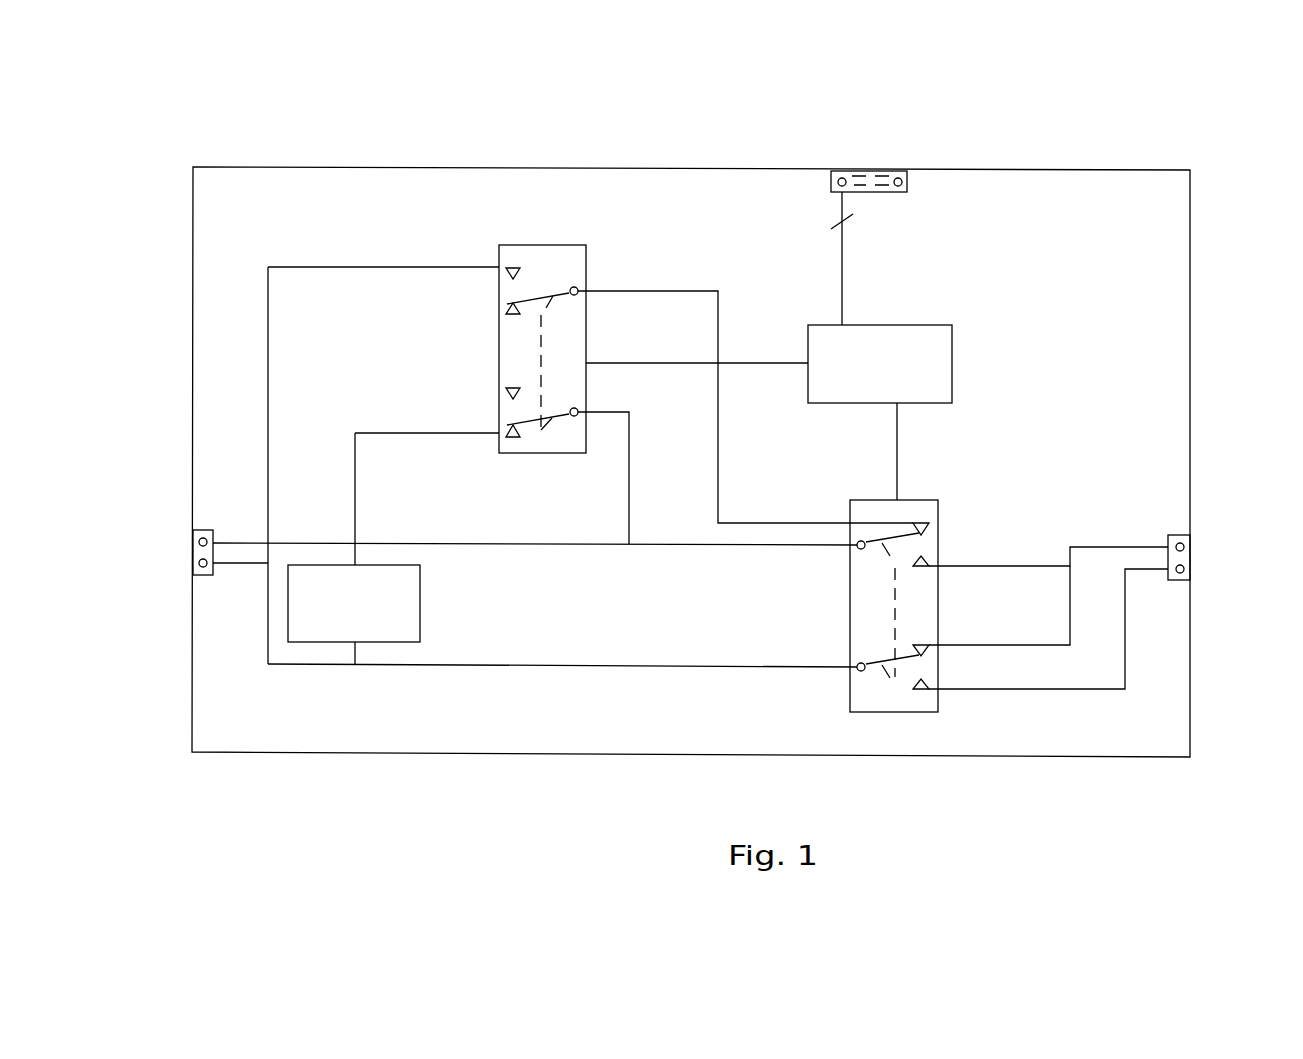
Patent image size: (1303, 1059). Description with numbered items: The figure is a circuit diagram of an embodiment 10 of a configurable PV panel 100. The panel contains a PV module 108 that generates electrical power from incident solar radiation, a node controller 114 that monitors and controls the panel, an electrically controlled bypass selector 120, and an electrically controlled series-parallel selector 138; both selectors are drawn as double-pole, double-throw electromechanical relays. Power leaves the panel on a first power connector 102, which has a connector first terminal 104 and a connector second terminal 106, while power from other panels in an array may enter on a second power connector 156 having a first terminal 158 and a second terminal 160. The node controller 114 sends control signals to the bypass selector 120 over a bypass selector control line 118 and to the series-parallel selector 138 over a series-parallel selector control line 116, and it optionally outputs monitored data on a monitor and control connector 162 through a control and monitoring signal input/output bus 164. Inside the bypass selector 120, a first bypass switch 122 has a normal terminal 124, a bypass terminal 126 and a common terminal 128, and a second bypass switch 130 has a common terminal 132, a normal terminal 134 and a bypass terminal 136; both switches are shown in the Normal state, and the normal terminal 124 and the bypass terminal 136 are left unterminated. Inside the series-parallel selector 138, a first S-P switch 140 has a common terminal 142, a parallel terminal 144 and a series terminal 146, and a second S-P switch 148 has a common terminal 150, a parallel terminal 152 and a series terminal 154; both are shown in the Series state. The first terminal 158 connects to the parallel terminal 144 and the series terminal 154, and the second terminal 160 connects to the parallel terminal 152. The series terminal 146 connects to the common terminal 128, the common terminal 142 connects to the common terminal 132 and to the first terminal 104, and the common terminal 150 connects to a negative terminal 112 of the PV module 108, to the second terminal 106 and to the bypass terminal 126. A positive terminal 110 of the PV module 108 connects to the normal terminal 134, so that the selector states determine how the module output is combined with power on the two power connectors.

The embodiment 10 is at (297, 90).
The configurable PV panel 100 is at (675, 168).
The first power connector P1 102 is at (202, 530).
The connector P1 first terminal 104 is at (193, 542).
The connector P1 second terminal 106 is at (193, 563).
The PV module 108 is at (420, 612).
The positive terminal 110 is at (357, 563).
The negative terminal 112 is at (357, 644).
The node controller 114 is at (927, 325).
The series-parallel selector control line 116 is at (897, 432).
The bypass selector control line 118 is at (735, 363).
The bypass selector 120 is at (520, 245).
The first bypass switch 122 is at (541, 295).
The normal terminal 124 is at (507, 314).
The bypass terminal 126 is at (508, 282).
The common terminal 128 is at (577, 296).
The second bypass switch 130 is at (531, 421).
The common terminal 132 is at (575, 407).
The normal terminal 134 is at (507, 437).
The bypass terminal 136 is at (507, 392).
The series-parallel selector Xn 138 is at (908, 500).
The first S-P switch 140 is at (897, 536).
The common terminal 142 is at (856, 552).
The parallel terminal 144 is at (930, 560).
The series terminal 146 is at (928, 522).
The second S-P switch 148 is at (900, 656).
The common terminal 150 is at (857, 676).
The parallel terminal 152 is at (921, 692).
The series terminal 154 is at (925, 645).
The second power connector P2 156 is at (1178, 535).
The first terminal 158 is at (1192, 547).
The second terminal 160 is at (1192, 569).
The monitor and control connector P3 162 is at (870, 193).
The control and monitoring signal input/output bus 164 is at (842, 258).